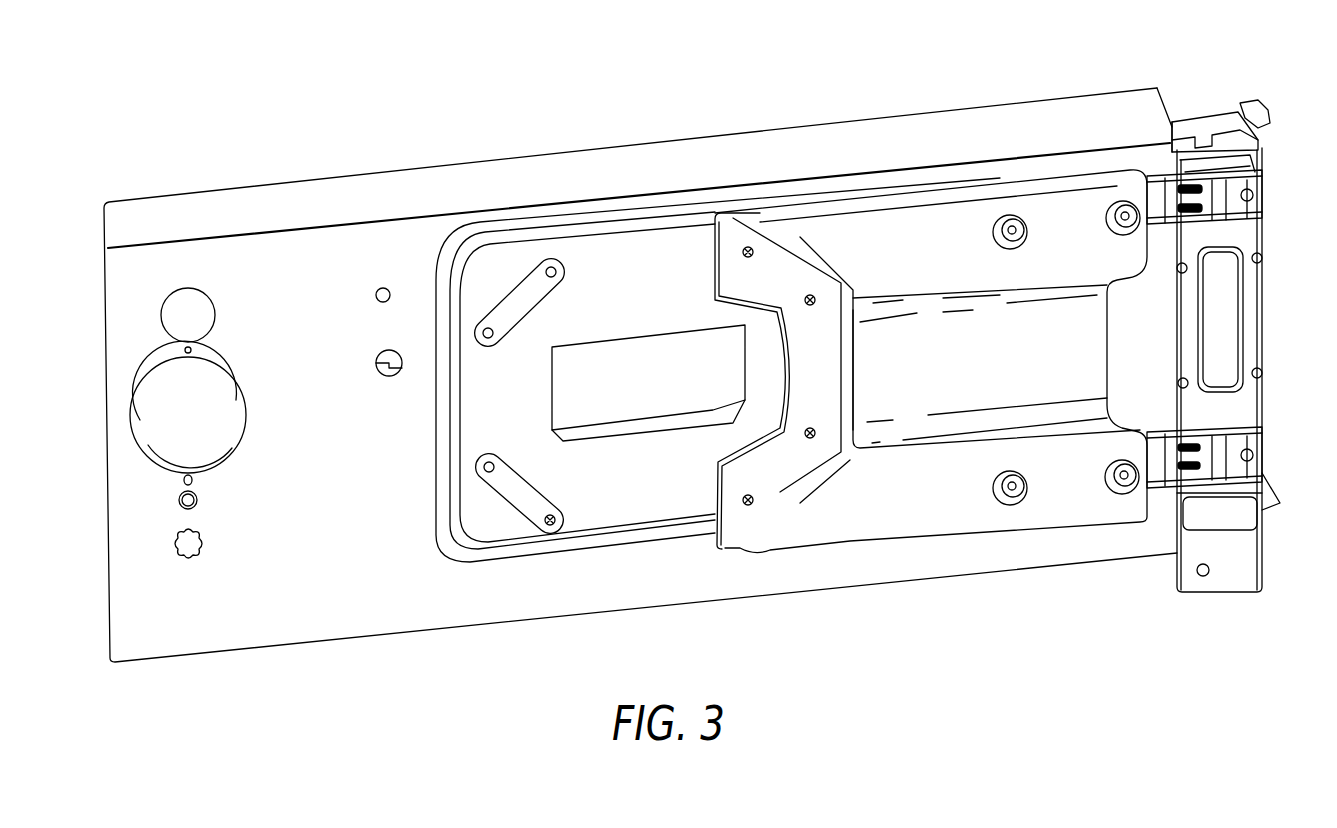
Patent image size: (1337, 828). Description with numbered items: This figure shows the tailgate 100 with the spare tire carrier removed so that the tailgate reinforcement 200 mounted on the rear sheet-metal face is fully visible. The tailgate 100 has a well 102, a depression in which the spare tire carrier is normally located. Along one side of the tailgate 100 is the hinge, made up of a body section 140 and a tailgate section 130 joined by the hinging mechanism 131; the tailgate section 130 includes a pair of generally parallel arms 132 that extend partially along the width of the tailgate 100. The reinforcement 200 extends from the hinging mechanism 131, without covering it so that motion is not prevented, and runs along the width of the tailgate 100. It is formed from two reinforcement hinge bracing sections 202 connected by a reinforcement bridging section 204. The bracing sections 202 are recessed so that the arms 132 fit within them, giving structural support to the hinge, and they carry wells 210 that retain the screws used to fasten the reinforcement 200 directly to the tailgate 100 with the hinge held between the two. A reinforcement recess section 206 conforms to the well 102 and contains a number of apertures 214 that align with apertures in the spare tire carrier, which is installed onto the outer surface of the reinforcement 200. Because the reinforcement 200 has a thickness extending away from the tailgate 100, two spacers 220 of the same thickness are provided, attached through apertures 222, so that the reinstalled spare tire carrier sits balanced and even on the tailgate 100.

The tailgate 100 is at (282, 255).
The well 102 is at (652, 265).
The tailgate section 130 is at (1193, 88).
The hinging mechanism 131 is at (1232, 195).
The arms 132 is at (1167, 172).
The body section 140 is at (1223, 520).
The tailgate reinforcement 200 is at (972, 205).
The reinforcement hinge bracing sections 202 is at (908, 220).
The reinforcement bridging section 204 is at (965, 385).
The reinforcement recess section 206 is at (783, 273).
The wells 210 is at (1120, 205).
The apertures 214 is at (748, 502).
The spacers 220 is at (528, 295).
The apertures 222 is at (550, 522).